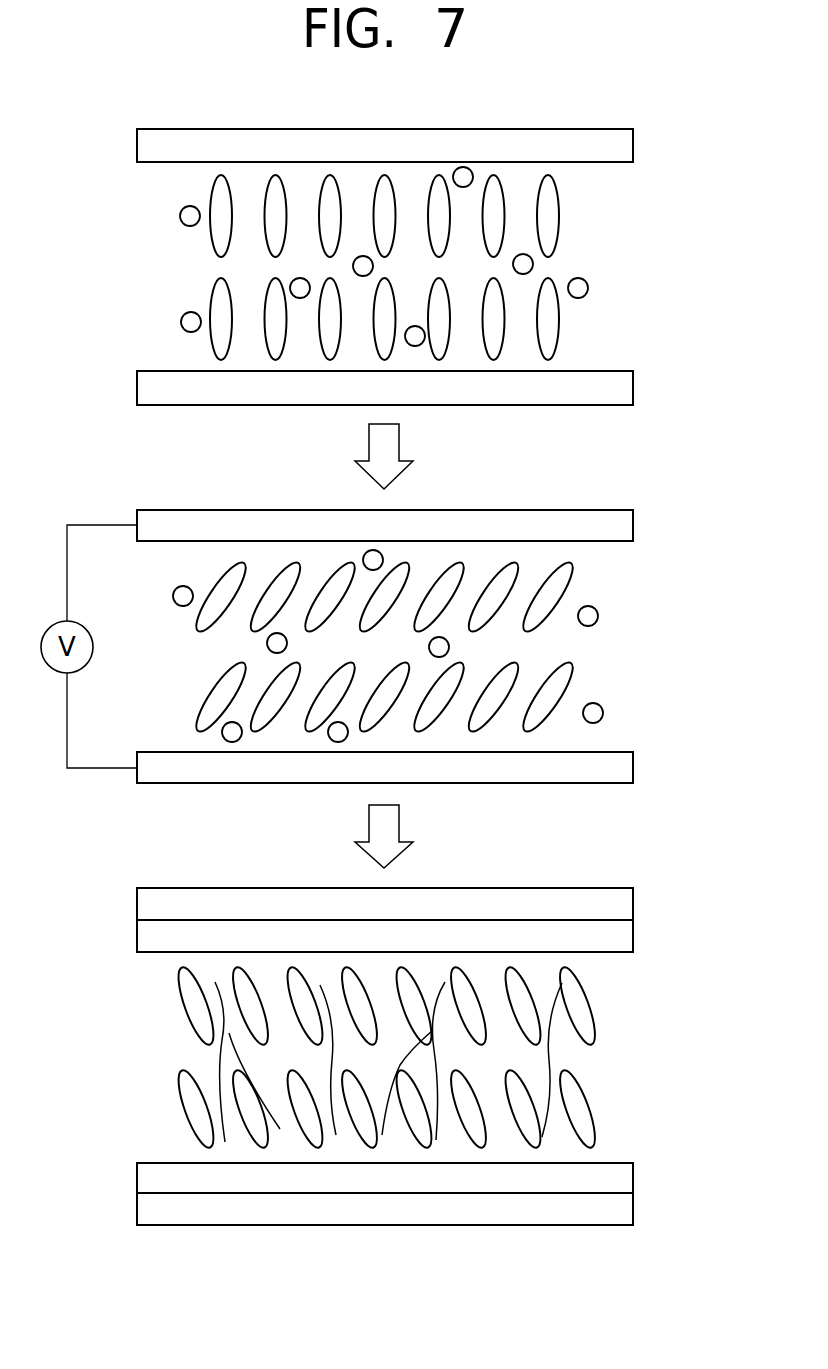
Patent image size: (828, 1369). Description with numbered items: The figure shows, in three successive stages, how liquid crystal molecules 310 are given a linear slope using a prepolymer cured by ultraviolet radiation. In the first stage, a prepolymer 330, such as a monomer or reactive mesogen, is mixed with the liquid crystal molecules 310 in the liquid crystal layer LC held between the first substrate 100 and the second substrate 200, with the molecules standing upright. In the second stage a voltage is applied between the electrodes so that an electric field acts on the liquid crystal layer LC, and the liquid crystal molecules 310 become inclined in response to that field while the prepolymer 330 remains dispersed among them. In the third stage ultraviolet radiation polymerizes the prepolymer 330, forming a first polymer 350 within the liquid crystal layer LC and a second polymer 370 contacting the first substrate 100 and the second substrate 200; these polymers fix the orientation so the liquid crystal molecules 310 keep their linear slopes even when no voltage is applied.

The first substrate 100 is at (622, 390).
The second substrate 200 is at (622, 148).
The liquid crystal molecules 310 is at (218, 298).
The prepolymer 330 is at (182, 216).
The first polymer 350 is at (226, 1061).
The second polymer 370 is at (622, 937).
The liquid crystal layer LC is at (652, 162).